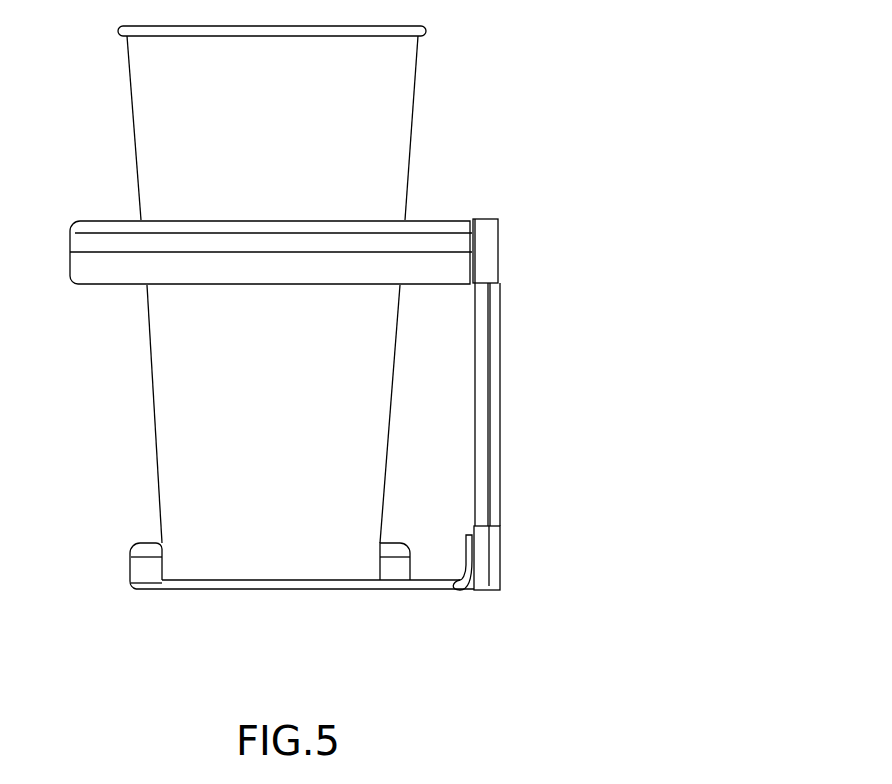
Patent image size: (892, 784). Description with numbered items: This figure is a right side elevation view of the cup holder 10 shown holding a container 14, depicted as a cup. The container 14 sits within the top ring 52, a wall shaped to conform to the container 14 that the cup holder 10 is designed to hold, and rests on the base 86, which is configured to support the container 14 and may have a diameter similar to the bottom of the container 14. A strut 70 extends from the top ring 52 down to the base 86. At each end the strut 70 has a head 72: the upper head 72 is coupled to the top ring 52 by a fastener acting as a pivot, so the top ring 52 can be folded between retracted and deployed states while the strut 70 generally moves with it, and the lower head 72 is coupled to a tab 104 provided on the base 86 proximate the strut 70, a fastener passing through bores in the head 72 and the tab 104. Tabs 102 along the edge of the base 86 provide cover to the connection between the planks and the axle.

The cup holder 10 is at (512, 82).
The container 14 is at (410, 150).
The top ring 52 is at (76, 238).
The strut 70 is at (502, 378).
The head 72 is at (490, 258).
The base 86 is at (278, 590).
The tabs 102 is at (132, 566).
The tab 104 is at (458, 580).